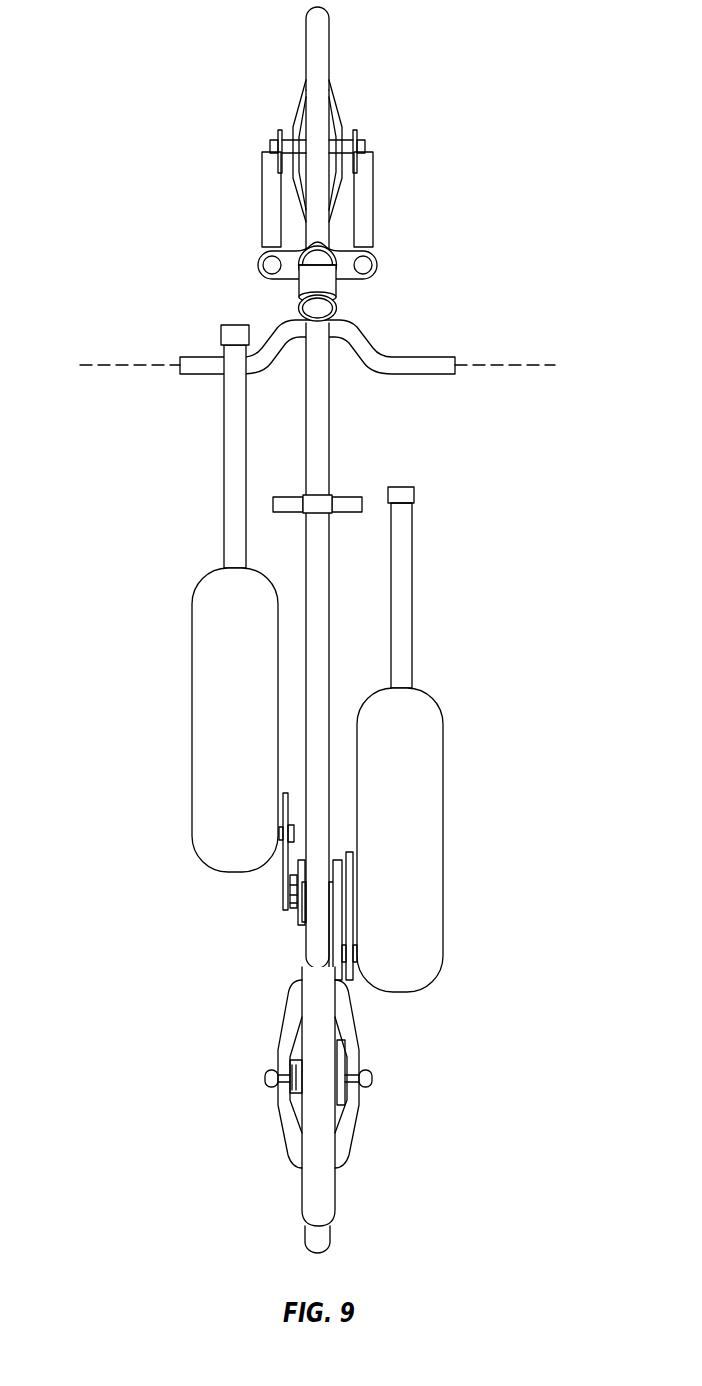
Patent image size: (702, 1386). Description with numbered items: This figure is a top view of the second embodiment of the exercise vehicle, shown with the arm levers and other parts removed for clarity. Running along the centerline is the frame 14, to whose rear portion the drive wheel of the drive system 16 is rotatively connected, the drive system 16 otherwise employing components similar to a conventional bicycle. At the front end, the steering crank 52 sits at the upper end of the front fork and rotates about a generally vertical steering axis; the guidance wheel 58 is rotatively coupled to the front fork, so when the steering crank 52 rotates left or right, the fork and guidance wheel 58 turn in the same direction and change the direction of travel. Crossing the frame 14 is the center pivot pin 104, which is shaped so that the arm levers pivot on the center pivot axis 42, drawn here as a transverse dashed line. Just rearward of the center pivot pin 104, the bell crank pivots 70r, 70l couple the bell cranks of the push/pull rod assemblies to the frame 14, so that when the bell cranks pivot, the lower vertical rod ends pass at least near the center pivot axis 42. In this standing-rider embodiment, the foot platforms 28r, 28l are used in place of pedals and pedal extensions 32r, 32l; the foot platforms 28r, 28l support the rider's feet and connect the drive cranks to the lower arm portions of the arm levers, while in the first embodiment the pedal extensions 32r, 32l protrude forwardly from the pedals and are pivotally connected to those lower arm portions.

The guidance wheel 58 is at (330, 50).
The steering crank 52 is at (377, 262).
The center pivot pin 104 is at (372, 347).
The frame 14 is at (331, 387).
The center pivot axis 42 is at (142, 367).
The left bell crank pivot 70l is at (273, 503).
The right bell crank pivot 70r is at (346, 497).
The left pedal extension 32l is at (223, 538).
The right pedal extension 32r is at (412, 593).
The left foot platform 28l is at (190, 720).
The right foot platform 28r is at (443, 840).
The drive system 16 is at (185, 850).